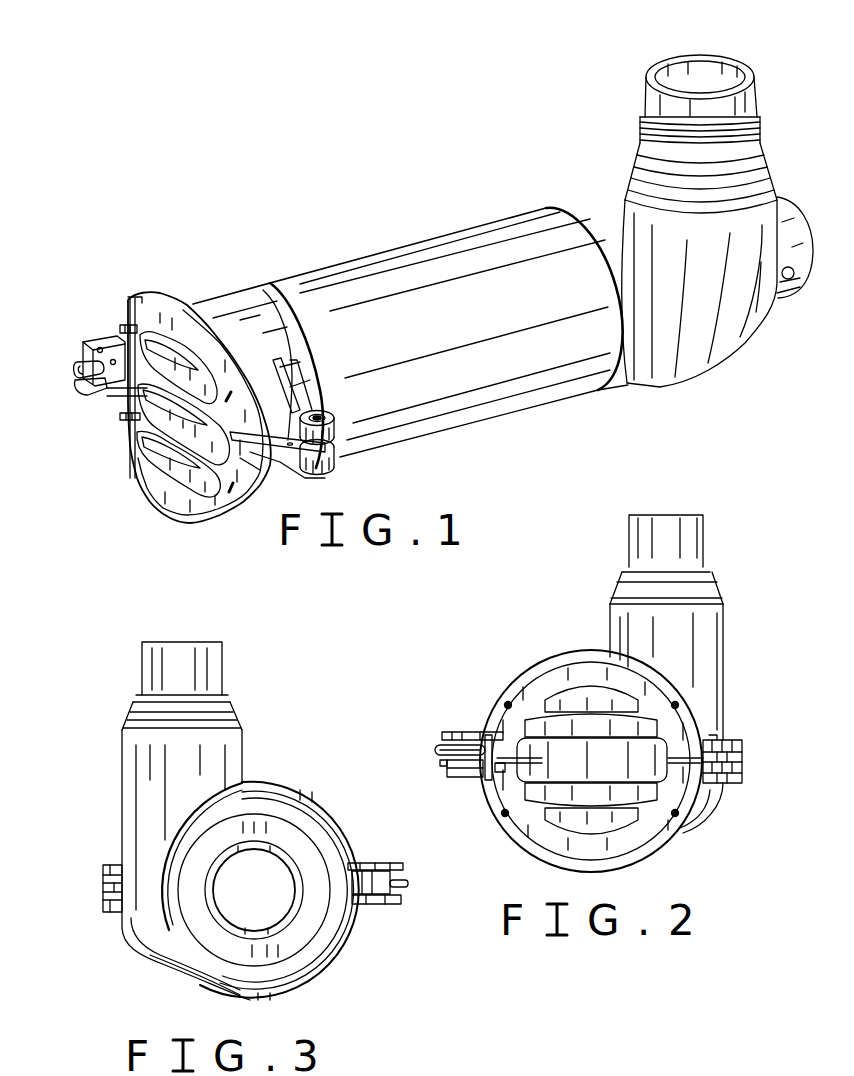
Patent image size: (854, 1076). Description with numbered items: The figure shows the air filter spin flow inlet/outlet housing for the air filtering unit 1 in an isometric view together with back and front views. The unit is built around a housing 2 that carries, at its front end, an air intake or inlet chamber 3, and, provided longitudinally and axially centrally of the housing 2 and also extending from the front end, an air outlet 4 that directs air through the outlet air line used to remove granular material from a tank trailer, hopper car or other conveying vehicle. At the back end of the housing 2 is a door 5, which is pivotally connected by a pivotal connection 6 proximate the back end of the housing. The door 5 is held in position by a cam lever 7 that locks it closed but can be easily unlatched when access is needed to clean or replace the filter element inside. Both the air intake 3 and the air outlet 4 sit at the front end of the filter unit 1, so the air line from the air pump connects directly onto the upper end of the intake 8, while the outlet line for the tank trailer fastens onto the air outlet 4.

In FIG. 1, the air filtering unit 1 is at (344, 204).
In FIG. 1, the housing 2 is at (494, 408).
In FIG. 1, the air intake or inlet chamber 3 is at (762, 123).
In FIG. 2, the air intake or inlet chamber 3 is at (709, 572).
In FIG. 3, the air intake or inlet chamber 3 is at (123, 720).
In FIG. 1, the air outlet 4 is at (780, 207).
In FIG. 3, the air outlet 4 is at (289, 923).
In FIG. 1, the door 5 is at (152, 508).
In FIG. 2, the door 5 is at (550, 837).
In FIG. 3, the door 5 is at (268, 891).
In FIG. 1, the pivotal connection 6 is at (328, 462).
In FIG. 2, the pivotal connection 6 is at (744, 770).
In FIG. 3, the pivotal connection 6 is at (103, 890).
In FIG. 1, the cam lever 7 is at (80, 362).
In FIG. 2, the cam lever 7 is at (435, 750).
In FIG. 3, the cam lever 7 is at (410, 881).
In FIG. 1, the upper end of the intake 8 is at (648, 97).